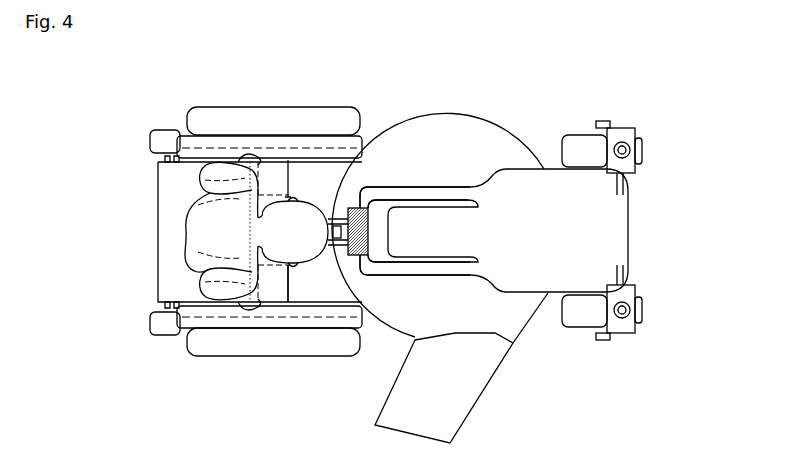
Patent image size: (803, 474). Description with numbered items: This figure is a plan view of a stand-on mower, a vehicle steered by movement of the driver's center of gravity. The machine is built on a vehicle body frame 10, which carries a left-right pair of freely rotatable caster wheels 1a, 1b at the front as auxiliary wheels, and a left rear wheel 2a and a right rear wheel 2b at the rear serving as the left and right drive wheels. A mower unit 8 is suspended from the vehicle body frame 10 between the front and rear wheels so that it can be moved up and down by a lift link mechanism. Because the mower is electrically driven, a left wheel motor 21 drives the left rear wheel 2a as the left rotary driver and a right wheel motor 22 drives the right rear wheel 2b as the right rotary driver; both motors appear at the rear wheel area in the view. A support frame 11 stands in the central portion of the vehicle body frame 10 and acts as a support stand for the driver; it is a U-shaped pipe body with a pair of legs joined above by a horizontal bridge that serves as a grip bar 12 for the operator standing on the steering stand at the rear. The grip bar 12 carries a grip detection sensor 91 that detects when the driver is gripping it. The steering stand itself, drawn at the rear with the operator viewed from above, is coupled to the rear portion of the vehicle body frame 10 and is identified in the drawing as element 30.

The caster wheel 1a is at (578, 143).
The caster wheel 1b is at (578, 322).
The left rear wheel 2a is at (233, 113).
The right rear wheel 2b is at (233, 343).
The mower unit 8 is at (480, 116).
The vehicle body frame 10 is at (540, 328).
The support frame 11 is at (417, 273).
The grip bar 12 is at (340, 173).
The left wheel motor 21 is at (298, 172).
The right wheel motor 22 is at (291, 283).
The seat 30 is at (170, 178).
The grip detection sensor 91 is at (369, 225).